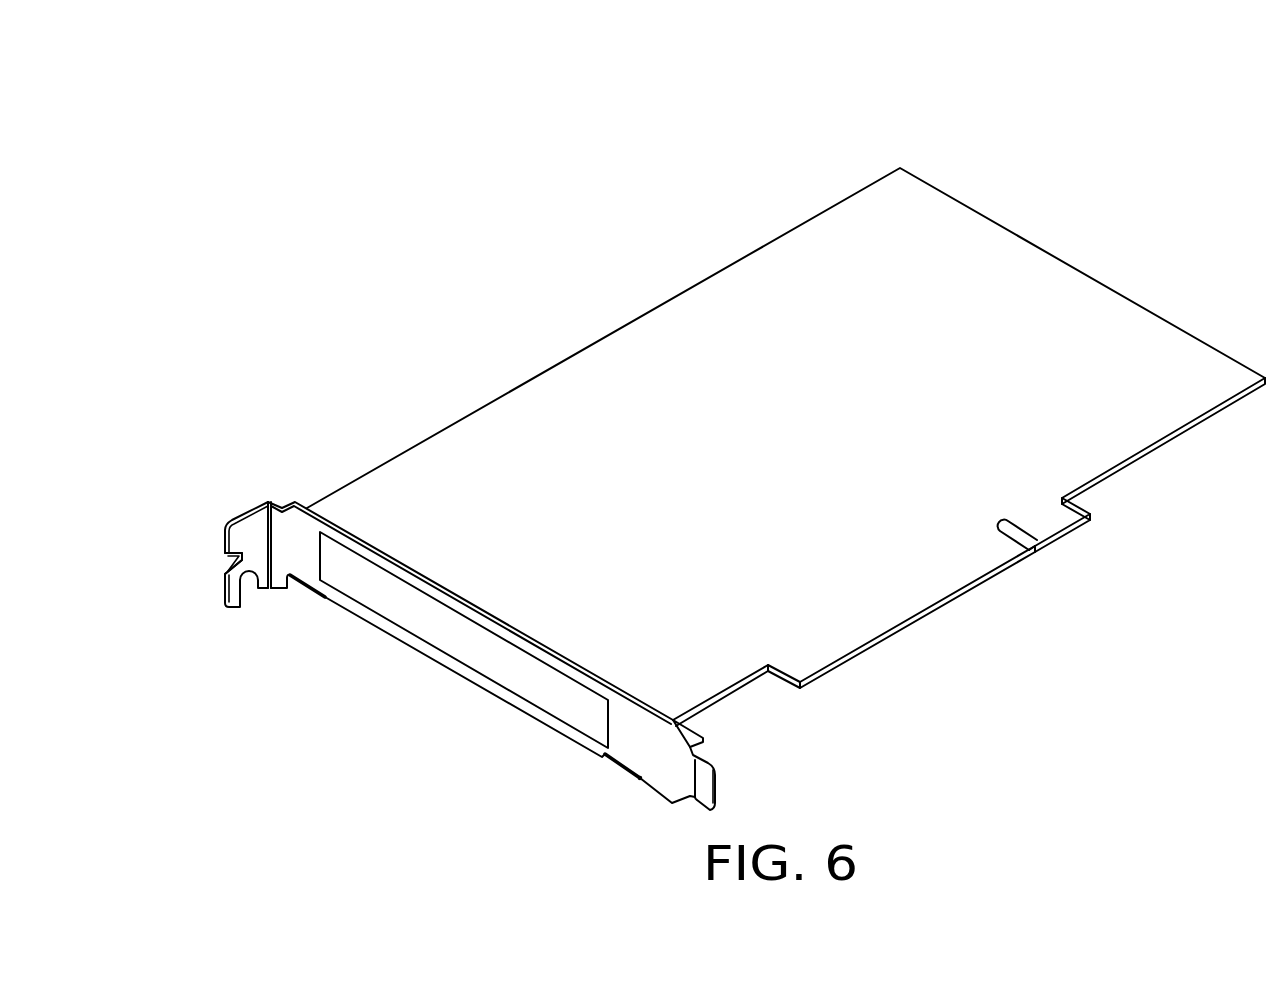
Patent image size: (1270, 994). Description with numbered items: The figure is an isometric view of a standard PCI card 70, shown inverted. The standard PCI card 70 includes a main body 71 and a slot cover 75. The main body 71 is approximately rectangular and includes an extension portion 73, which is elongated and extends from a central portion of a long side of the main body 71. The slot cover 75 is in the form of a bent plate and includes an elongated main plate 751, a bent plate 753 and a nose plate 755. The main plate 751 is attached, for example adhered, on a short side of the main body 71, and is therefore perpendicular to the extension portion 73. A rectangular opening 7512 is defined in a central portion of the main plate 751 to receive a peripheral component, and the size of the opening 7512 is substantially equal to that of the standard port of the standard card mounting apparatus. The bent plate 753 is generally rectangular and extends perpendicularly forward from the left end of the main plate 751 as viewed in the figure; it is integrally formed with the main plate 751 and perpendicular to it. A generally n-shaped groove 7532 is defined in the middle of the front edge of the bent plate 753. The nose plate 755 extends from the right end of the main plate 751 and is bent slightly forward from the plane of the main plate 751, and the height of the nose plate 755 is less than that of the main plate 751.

The standard PCI card 70 is at (793, 84).
The main body 71 is at (1035, 293).
The extension portion 73 is at (1048, 515).
The slot cover 75 is at (612, 853).
The main plate 751 is at (520, 700).
The opening 7512 is at (423, 612).
The bent plate 753 is at (260, 543).
The groove 7532 is at (222, 568).
The nose plate 755 is at (703, 778).